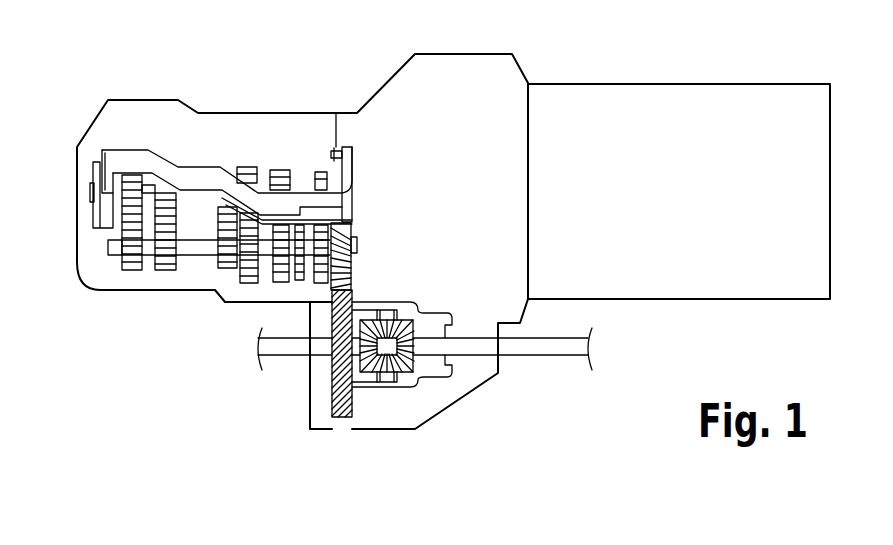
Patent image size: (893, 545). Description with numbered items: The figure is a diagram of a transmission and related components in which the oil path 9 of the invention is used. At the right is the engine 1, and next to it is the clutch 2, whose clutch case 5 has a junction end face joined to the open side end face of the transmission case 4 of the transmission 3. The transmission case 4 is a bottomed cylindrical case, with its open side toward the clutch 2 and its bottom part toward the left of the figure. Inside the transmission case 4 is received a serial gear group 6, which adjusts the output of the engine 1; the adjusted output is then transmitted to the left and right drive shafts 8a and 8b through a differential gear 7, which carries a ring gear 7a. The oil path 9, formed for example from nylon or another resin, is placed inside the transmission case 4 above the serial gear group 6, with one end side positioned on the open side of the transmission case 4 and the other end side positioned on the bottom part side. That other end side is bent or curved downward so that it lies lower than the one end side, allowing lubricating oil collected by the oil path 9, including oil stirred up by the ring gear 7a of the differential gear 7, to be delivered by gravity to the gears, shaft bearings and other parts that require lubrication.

The engine 1 is at (688, 98).
The clutch 2 is at (383, 214).
The clutch case 5 is at (468, 70).
The transmission 3 is at (201, 175).
The transmission case 4 is at (108, 122).
The oil path 9 is at (198, 177).
The serial gear group 6 is at (147, 275).
The differential gear 7 is at (398, 387).
The ring gear 7a is at (345, 417).
The left drive shaft 8a is at (287, 350).
The right drive shaft 8b is at (542, 348).